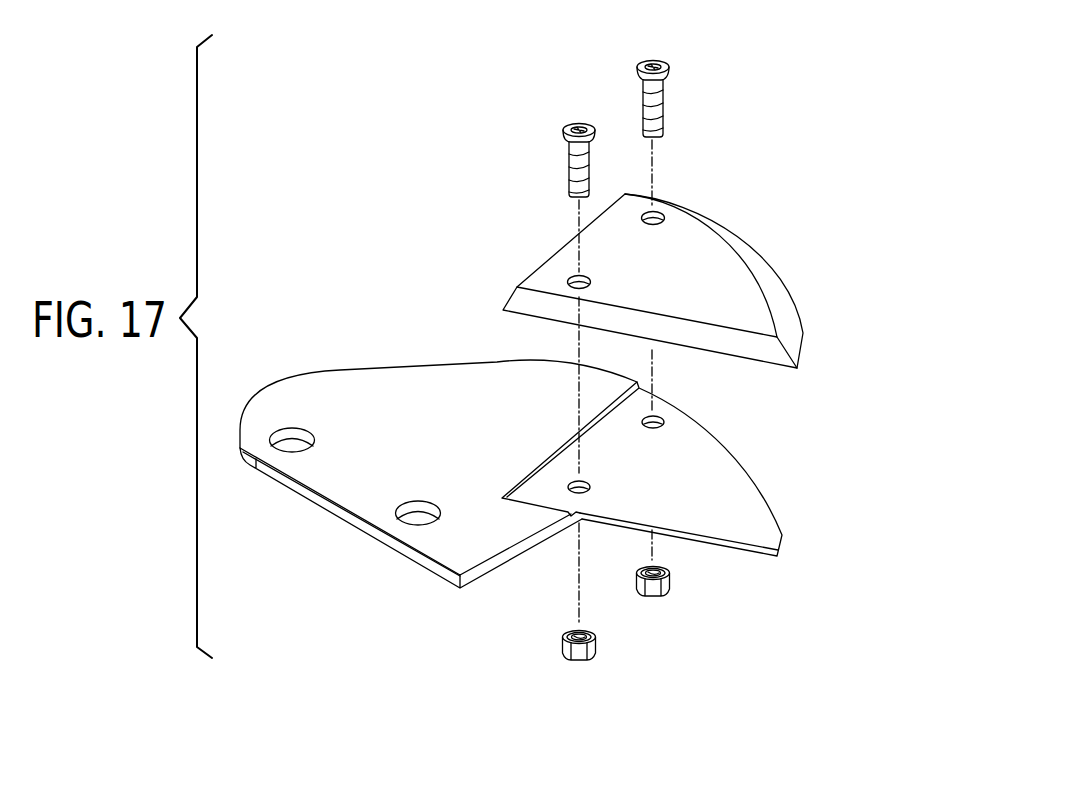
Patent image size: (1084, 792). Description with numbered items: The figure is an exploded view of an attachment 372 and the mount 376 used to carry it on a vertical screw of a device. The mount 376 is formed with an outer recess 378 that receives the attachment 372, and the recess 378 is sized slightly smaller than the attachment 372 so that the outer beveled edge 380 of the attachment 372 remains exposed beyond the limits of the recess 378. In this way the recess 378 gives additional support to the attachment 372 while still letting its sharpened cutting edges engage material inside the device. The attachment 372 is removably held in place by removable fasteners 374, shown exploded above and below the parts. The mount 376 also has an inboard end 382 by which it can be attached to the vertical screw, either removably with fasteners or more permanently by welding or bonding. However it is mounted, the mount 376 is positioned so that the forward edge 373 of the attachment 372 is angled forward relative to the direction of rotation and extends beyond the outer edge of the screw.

The attachment 372 is at (722, 257).
The forward edge 373 is at (528, 303).
The removable fasteners 374 is at (651, 71).
The mount 376 is at (407, 392).
The outer recess 378 is at (747, 492).
The outer beveled edge 380 is at (795, 333).
The inboard end 382 is at (347, 483).